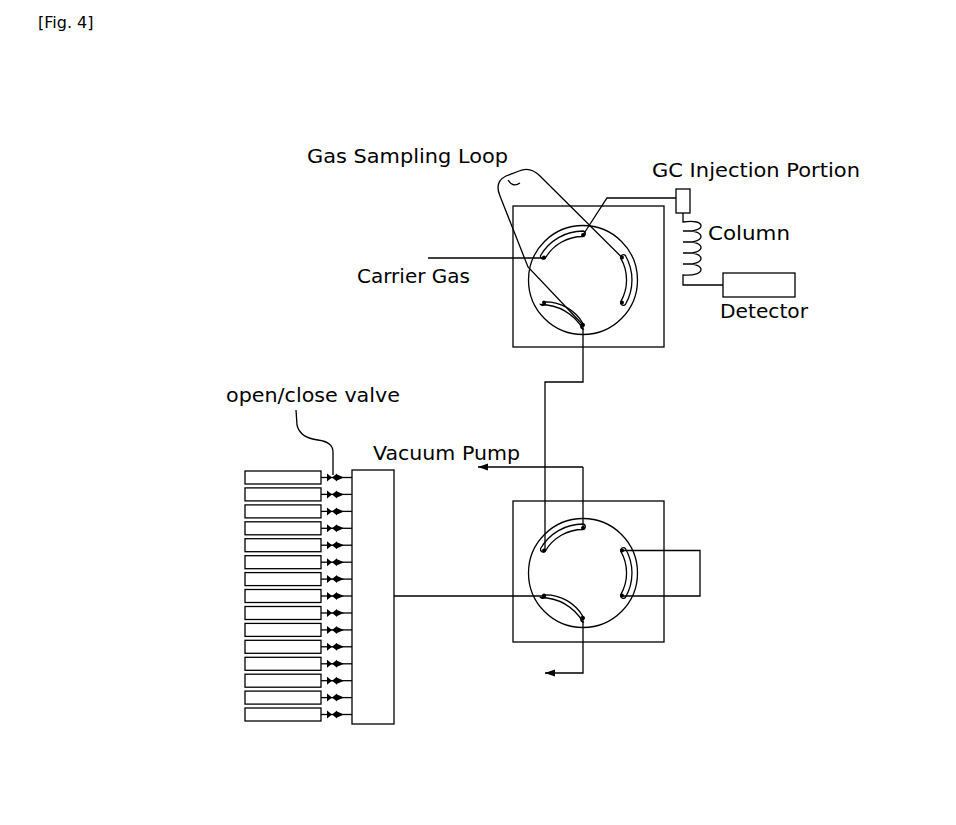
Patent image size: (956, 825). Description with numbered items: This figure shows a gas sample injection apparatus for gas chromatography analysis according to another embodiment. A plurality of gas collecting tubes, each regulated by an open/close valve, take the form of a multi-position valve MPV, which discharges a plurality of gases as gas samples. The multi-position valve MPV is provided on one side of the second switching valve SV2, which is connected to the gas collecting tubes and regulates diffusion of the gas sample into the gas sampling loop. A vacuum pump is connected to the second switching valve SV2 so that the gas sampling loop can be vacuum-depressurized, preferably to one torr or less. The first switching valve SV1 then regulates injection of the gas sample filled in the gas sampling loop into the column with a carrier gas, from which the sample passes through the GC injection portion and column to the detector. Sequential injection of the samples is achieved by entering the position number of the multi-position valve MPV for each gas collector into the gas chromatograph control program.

The first switching valve SV1 is at (630, 310).
The second switching valve SV2 is at (682, 660).
The multi-position valve MPV is at (373, 597).